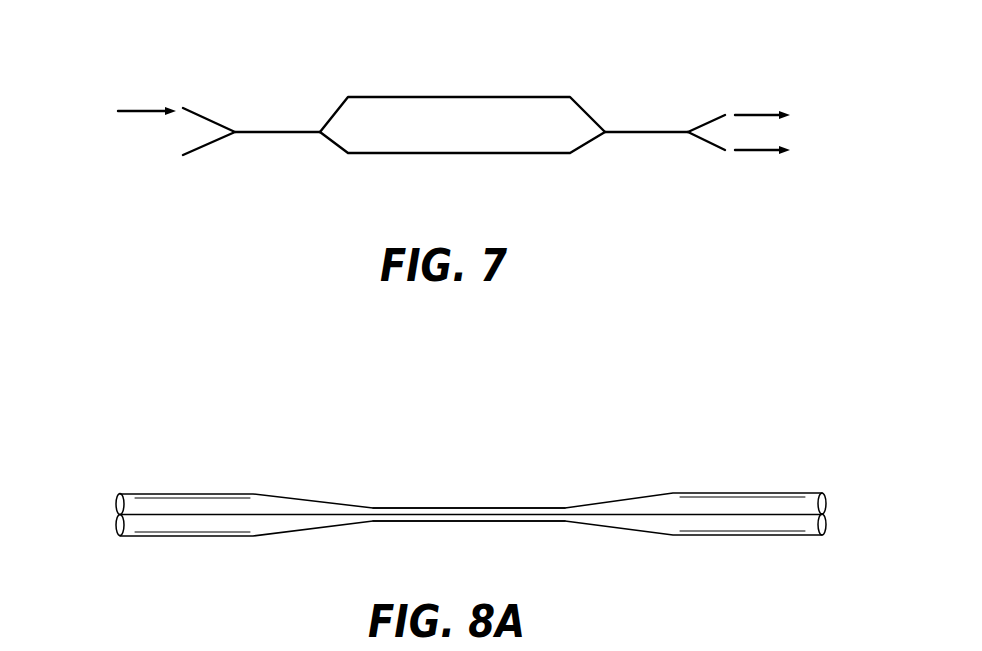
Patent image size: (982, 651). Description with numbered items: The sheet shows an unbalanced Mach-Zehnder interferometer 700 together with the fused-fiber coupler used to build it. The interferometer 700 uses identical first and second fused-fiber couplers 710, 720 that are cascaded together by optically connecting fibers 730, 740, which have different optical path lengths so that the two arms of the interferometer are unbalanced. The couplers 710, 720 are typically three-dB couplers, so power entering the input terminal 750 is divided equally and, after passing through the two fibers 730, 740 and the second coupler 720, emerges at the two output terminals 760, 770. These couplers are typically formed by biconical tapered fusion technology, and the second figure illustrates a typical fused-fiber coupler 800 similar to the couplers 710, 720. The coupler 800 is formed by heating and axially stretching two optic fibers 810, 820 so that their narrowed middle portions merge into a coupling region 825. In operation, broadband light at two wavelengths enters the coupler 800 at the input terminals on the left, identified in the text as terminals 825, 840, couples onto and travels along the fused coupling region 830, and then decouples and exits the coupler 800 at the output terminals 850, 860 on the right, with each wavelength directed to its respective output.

In FIG. 7, the unbalanced Mach-Zehnder interferometer 700 is at (454, 114).
In FIG. 7, the first fused-fiber coupler 710 is at (251, 97).
In FIG. 7, the second fused-fiber coupler 720 is at (638, 86).
In FIG. 7, the connecting fiber 730 is at (462, 84).
In FIG. 7, the connecting fiber 740 is at (462, 170).
In FIG. 7, the input terminal 750 is at (186, 82).
In FIG. 7, the output terminal 760 is at (739, 93).
In FIG. 7, the output terminal 770 is at (739, 178).
In FIG. 8A, the fused-fiber coupler 800 is at (473, 483).
In FIG. 8A, the optic fiber 810 is at (471, 474).
In FIG. 8A, the optic fiber 820 is at (471, 554).
In FIG. 8A, the coupling region 825 is at (469, 473).
In FIG. 8A, the fused coupling region 830 is at (80, 484).
In FIG. 8A, the input terminal 840 is at (80, 542).
In FIG. 8A, the output terminal 850 is at (863, 491).
In FIG. 8A, the output terminal 860 is at (863, 540).